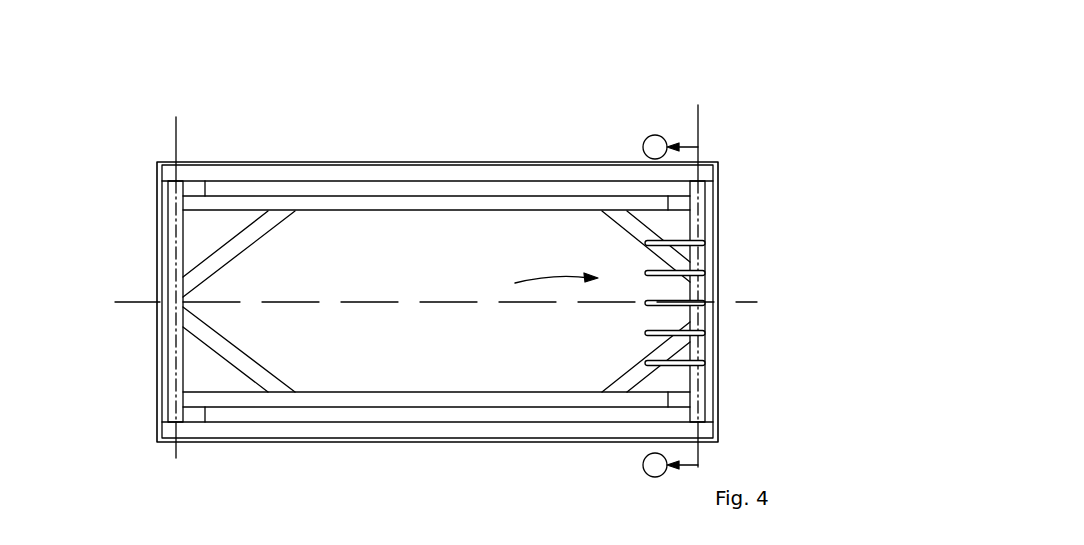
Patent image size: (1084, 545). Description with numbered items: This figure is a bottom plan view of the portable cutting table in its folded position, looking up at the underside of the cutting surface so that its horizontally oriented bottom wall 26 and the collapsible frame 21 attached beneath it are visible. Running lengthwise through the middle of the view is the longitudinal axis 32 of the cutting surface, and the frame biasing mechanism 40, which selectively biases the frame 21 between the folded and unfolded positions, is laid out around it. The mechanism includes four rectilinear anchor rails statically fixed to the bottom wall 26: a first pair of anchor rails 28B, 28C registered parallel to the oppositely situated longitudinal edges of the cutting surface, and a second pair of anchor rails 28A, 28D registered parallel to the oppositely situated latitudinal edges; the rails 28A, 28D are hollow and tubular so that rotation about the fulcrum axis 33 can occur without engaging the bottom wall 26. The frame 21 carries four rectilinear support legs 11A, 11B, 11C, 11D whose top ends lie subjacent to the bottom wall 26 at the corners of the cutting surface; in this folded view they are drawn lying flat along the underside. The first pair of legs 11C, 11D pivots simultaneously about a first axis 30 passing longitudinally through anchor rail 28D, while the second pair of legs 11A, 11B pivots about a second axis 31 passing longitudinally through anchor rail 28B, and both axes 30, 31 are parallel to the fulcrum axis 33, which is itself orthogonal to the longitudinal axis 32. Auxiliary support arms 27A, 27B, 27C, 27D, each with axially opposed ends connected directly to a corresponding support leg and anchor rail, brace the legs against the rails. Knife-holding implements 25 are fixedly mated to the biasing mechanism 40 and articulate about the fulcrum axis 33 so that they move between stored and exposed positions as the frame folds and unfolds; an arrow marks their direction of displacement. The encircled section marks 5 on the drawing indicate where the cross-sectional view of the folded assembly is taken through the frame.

The collapsible frame 21 is at (390, 281).
The frame biasing mechanism 40 is at (140, 398).
The anchor rail 28C is at (333, 178).
The anchor rail 28A is at (285, 433).
The anchor rail 28B is at (180, 282).
The anchor rail 28D is at (700, 312).
The support leg 11A is at (398, 205).
The support leg 11B is at (428, 393).
The support leg 11C is at (468, 190).
The support leg 11D is at (552, 416).
The auxiliary support arm 27A is at (206, 256).
The auxiliary support arm 27B is at (193, 324).
The auxiliary support arm 27C is at (640, 227).
The auxiliary support arm 27D is at (640, 368).
The bottom wall 26 is at (414, 287).
The knife-holding implements 25 is at (541, 286).
The second axis 31 is at (180, 128).
The first axis 30 is at (741, 286).
The fulcrum axis 33 is at (699, 120).
The longitudinal axis 32 is at (745, 302).
The section view FIG. 5 indicator 5 is at (670, 306).